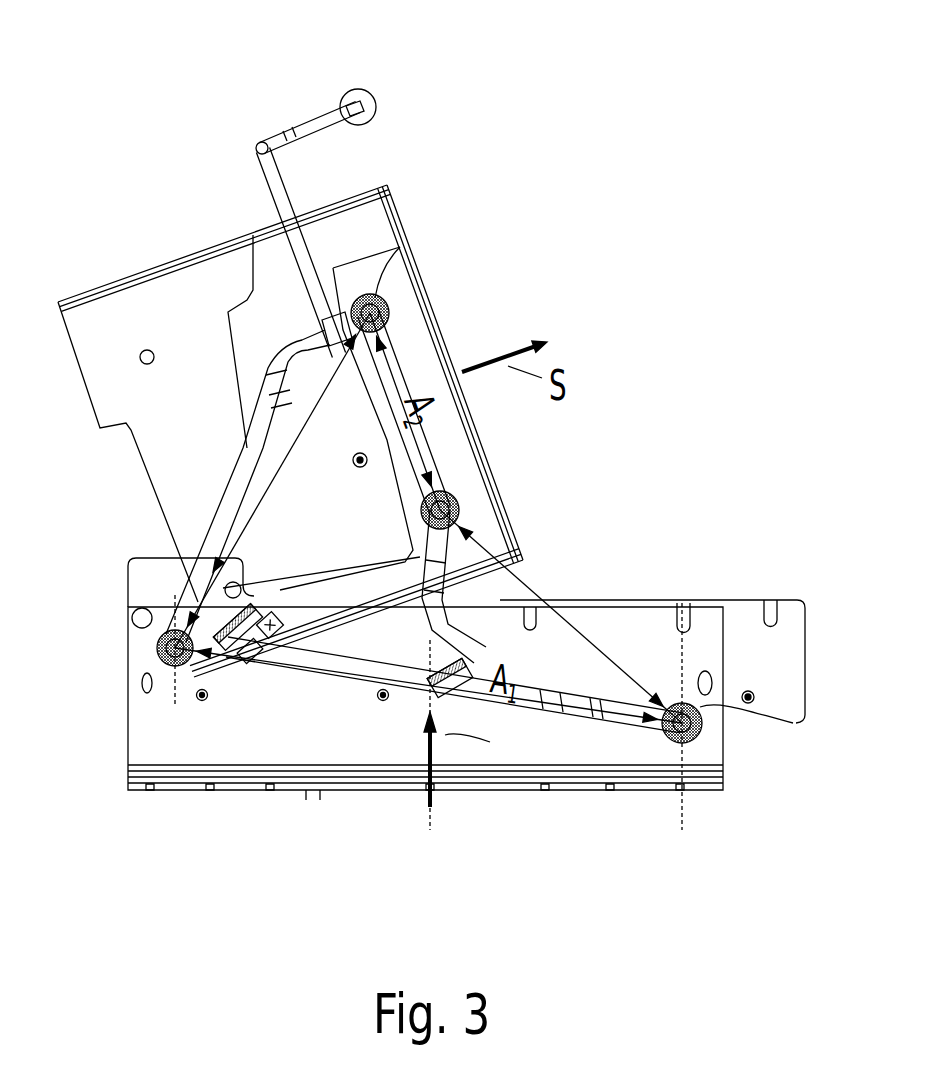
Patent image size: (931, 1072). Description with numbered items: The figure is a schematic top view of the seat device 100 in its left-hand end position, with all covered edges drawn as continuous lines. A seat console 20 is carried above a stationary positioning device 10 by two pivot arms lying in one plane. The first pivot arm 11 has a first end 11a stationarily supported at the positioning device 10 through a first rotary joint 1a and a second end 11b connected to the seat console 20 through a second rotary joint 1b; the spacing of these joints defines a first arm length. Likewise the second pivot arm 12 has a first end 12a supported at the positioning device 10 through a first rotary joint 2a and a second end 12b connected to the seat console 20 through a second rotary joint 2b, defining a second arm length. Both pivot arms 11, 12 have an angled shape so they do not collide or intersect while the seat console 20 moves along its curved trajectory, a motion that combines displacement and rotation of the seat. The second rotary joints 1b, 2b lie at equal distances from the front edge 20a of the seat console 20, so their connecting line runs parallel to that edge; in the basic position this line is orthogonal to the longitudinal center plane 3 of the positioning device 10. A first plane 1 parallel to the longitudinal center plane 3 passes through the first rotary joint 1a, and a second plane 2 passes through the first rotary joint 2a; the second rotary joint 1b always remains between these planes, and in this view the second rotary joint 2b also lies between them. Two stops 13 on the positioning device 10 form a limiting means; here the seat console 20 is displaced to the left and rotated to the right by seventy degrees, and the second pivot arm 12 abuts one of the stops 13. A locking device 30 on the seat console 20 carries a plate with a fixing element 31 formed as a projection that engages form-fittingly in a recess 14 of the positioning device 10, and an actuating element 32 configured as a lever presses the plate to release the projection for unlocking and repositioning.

The seat device 100 is at (674, 140).
The positioning device 10 is at (128, 785).
The seat console 20 is at (299, 376).
The front edge 20a is at (430, 318).
The actuating element 32 is at (257, 177).
The locking device 30 is at (405, 457).
The fixing element 31 is at (177, 553).
The first plane 1 is at (172, 680).
The first rotary joint 1a is at (160, 648).
The second rotary joint 1b is at (395, 285).
The second plane 2 is at (690, 767).
The first rotary joint 2a is at (710, 773).
The second rotary joint 2b is at (465, 517).
The first pivot arm 11 is at (192, 598).
The first end 11a is at (203, 822).
The second end 11b is at (400, 378).
The second pivot arm 12 is at (470, 692).
The first end 12a is at (647, 748).
The second end 12b is at (453, 543).
The stops 13 is at (253, 670).
The recess 14 is at (540, 600).
The longitudinal center plane 3 is at (437, 813).